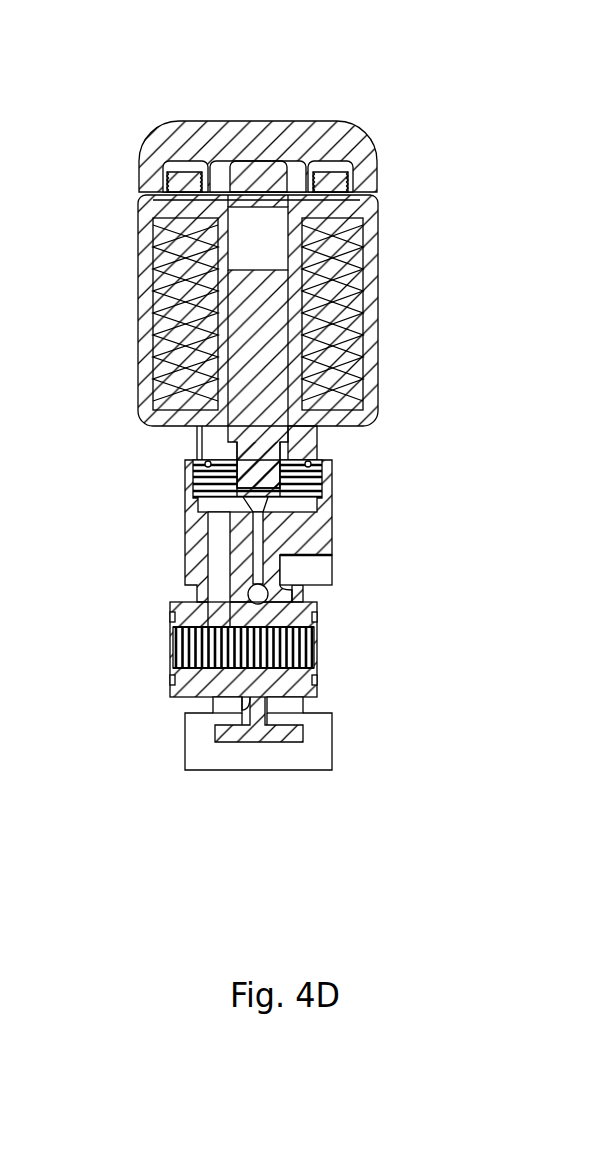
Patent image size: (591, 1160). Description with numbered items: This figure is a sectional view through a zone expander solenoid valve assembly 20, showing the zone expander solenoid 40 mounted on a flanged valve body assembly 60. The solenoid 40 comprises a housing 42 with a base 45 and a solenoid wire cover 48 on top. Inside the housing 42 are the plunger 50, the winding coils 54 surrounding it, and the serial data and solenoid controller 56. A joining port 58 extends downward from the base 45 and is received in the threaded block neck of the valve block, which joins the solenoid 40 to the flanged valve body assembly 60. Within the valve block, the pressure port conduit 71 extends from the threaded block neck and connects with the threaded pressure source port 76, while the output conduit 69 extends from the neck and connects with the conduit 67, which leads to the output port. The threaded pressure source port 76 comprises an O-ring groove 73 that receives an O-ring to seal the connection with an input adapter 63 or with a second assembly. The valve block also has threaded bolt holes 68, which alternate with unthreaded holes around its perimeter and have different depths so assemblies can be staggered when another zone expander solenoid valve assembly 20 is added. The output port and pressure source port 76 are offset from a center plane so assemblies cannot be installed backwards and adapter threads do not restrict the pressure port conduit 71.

The zone expander solenoid valve assembly 20 is at (127, 75).
The solenoid wire cover 48 is at (160, 138).
The serial data and solenoid controller 56 is at (375, 193).
The zone expander solenoid 40 is at (402, 243).
The plunger 50 is at (265, 305).
The housing 42 is at (147, 297).
The winding coils 54 is at (327, 358).
The base 45 is at (176, 425).
The joining port 58 is at (318, 441).
The flanged valve body assembly 60 is at (366, 553).
The pressure port conduit 71 is at (222, 547).
The output conduit 69 is at (257, 573).
The conduit 67 is at (266, 599).
The input adapter 63 is at (158, 651).
The O-ring groove 73 is at (172, 680).
The threaded pressure source port 76 is at (300, 693).
The threaded bolt holes 68 is at (332, 740).